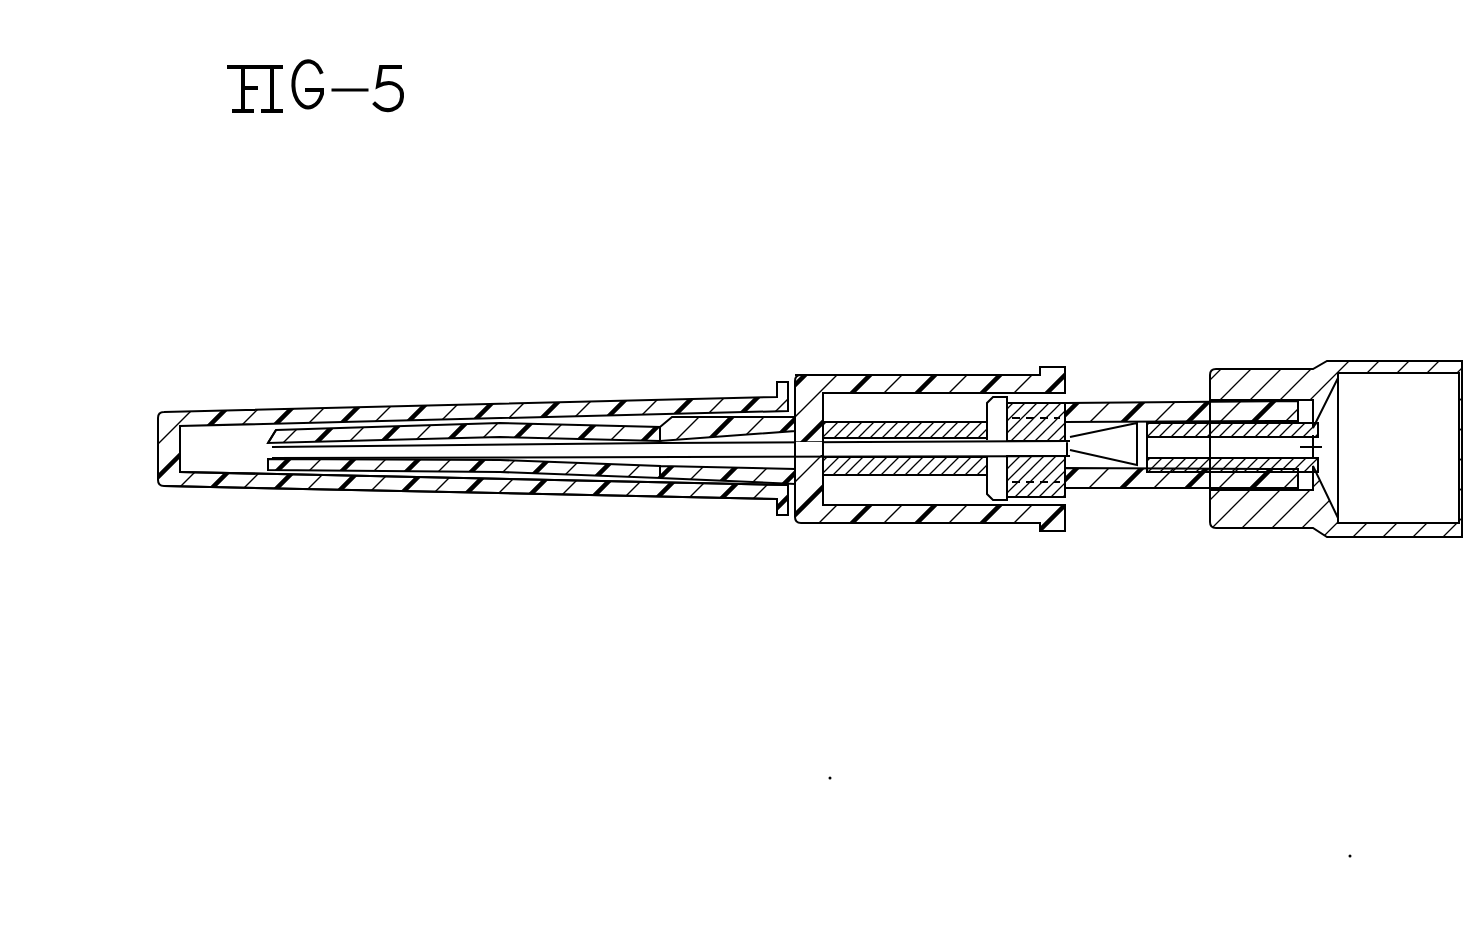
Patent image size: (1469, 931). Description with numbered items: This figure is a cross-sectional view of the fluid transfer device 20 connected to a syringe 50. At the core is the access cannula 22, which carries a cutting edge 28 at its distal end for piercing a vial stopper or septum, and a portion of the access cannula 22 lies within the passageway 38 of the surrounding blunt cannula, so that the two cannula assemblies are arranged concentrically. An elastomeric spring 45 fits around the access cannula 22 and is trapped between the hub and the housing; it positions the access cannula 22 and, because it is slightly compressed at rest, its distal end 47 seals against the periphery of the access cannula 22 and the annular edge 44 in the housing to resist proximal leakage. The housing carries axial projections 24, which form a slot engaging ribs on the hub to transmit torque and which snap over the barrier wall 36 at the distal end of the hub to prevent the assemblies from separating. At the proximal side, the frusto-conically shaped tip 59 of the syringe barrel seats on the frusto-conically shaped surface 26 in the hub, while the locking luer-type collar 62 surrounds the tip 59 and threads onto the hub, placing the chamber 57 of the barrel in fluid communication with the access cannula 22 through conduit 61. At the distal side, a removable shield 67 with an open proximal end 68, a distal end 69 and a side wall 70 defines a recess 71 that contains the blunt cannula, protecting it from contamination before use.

The fluid transfer device 20 is at (873, 362).
The access cannula 22 is at (597, 450).
The axial projections 24 is at (1062, 398).
The frusto-conically shaped surface 26 is at (1250, 465).
The cutting edge 28 is at (352, 448).
The barrier wall 36 is at (975, 490).
The passageway 38 is at (270, 440).
The annular edge 44 is at (835, 383).
The spring 45 is at (935, 483).
The distal end of the spring 47 is at (903, 472).
The syringe 50 is at (1353, 346).
The chamber 57 is at (1412, 483).
The frusto-conically shaped tip 59 is at (1150, 430).
The conduit 61 is at (1318, 447).
The locking luer-type collar 62 is at (1263, 368).
The removable shield 67 is at (468, 406).
The open proximal end 68 is at (747, 497).
The distal end 69 is at (172, 410).
The side wall 70 is at (425, 488).
The recess 71 is at (218, 490).